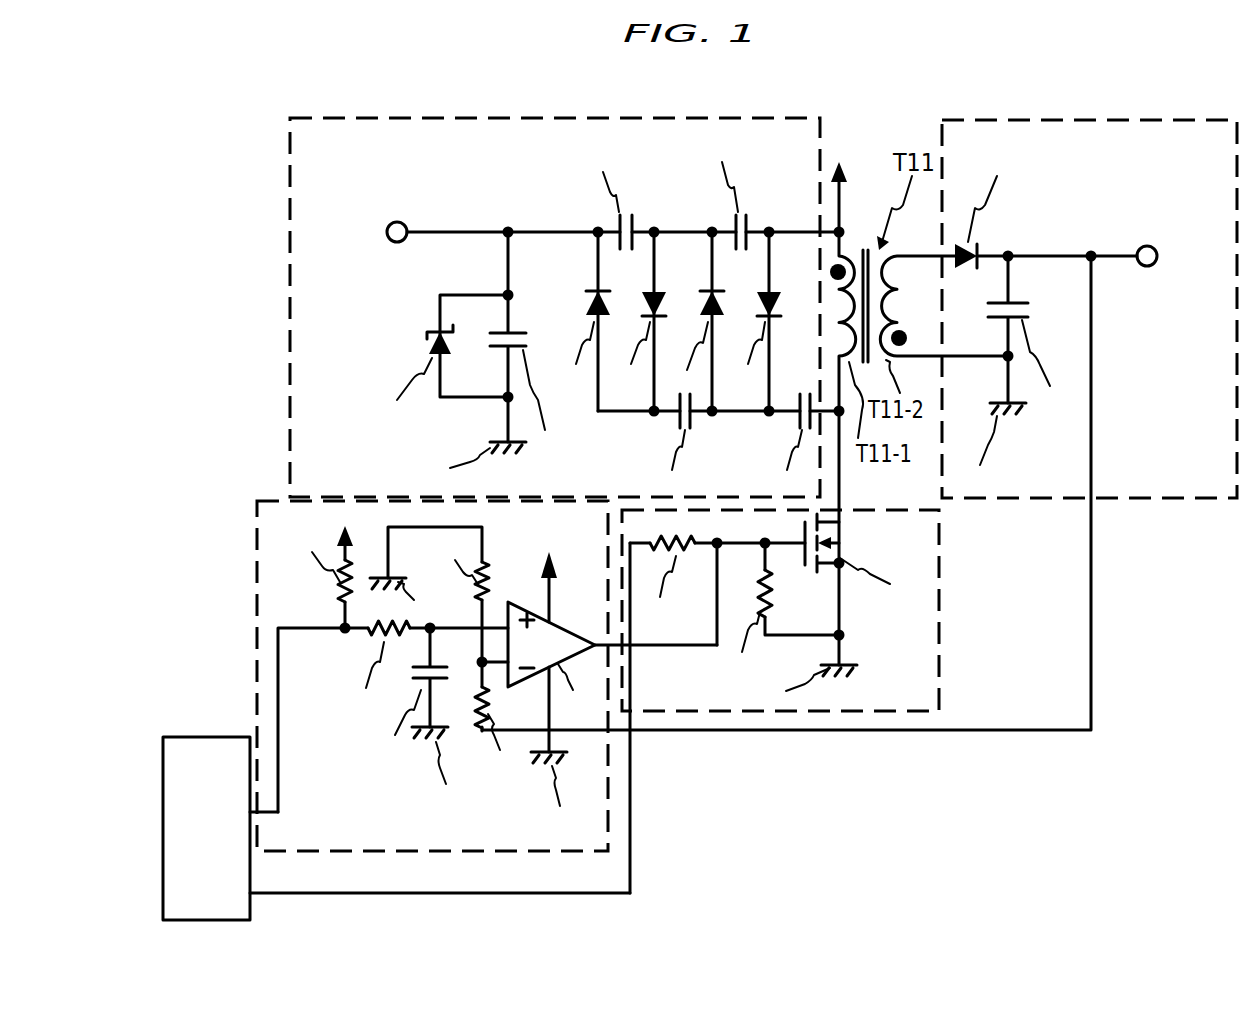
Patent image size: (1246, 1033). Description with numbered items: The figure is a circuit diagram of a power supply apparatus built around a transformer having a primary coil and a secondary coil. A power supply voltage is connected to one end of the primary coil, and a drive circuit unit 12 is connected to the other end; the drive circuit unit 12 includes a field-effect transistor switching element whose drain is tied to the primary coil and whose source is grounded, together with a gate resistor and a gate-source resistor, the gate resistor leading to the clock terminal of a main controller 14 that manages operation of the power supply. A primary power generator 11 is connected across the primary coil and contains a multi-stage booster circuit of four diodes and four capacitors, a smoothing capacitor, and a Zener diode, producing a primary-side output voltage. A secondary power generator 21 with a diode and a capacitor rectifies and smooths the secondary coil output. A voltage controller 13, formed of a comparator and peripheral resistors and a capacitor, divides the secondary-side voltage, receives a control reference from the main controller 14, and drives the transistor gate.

The primary power generator 11 is at (362, 118).
The drive circuit unit 12 is at (940, 685).
The voltage controller 13 is at (257, 550).
The main controller 14 is at (222, 737).
The secondary power generator 21 is at (1015, 118).